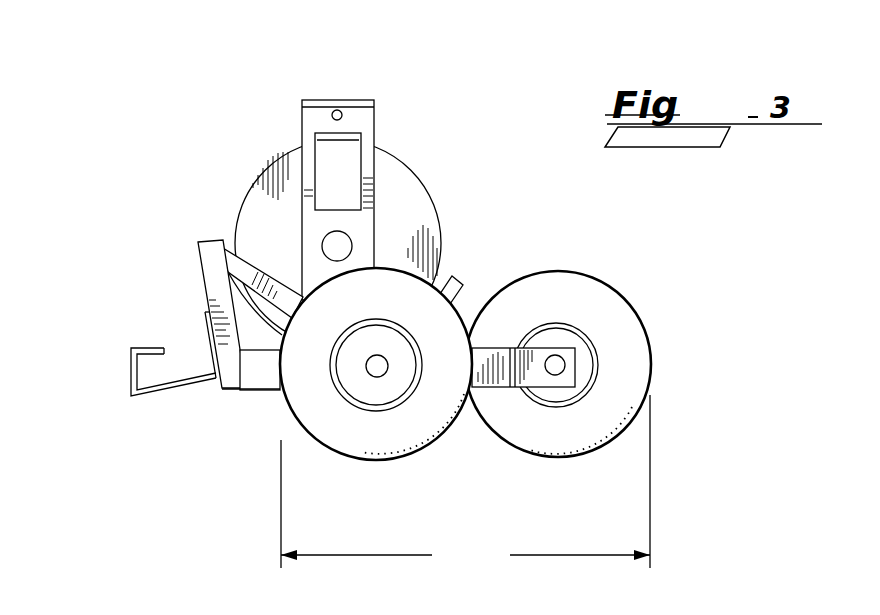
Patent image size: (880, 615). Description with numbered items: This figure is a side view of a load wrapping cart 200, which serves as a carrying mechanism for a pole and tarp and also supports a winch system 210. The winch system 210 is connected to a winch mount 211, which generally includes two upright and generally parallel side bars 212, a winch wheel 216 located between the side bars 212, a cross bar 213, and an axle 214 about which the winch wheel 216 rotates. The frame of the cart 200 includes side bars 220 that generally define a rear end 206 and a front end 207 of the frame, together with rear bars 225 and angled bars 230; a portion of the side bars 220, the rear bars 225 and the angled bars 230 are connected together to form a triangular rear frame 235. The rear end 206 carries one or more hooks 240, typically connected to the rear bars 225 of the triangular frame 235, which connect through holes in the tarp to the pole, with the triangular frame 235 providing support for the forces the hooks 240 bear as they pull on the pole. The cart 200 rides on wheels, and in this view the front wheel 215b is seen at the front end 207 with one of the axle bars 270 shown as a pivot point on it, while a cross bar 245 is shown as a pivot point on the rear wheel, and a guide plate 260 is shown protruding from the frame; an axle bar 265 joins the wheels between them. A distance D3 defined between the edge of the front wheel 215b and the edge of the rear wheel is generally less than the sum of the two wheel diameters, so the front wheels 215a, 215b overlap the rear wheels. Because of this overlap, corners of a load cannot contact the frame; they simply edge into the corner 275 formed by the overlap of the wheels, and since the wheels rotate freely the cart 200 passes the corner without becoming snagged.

The load wrapping cart 200 is at (420, 290).
The rear end 206 is at (141, 374).
The front end 207 is at (619, 361).
The winch system 210 is at (343, 179).
The winch mount 211 is at (402, 156).
The side bars 212 is at (368, 115).
The cross bar 213 is at (337, 110).
The axle 214 is at (345, 245).
The front wheel 215a is at (393, 400).
The front wheel 215b is at (547, 462).
The winch wheel 216 is at (302, 148).
The side bars 220 is at (260, 377).
The rear bars 225 is at (214, 268).
The angled bars 230 is at (224, 237).
The triangular rear frame 235 is at (180, 281).
The hooks 240 is at (142, 396).
The cross bar 245 is at (368, 372).
The guide plate 260 is at (460, 278).
The axle bar 265 is at (523, 367).
The axle bar 270 is at (562, 362).
The corner 275 is at (464, 446).